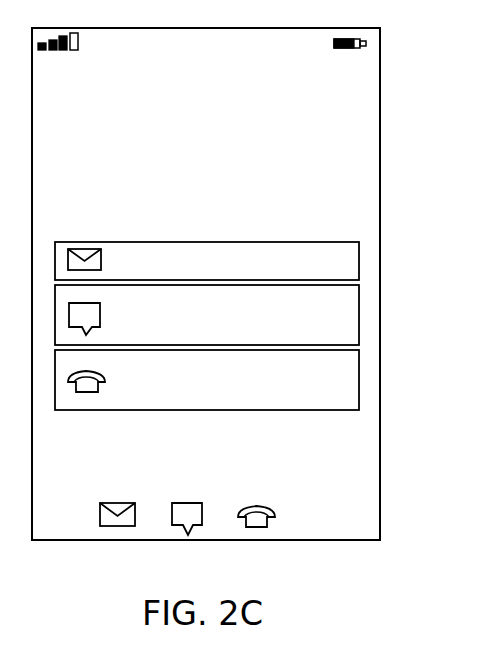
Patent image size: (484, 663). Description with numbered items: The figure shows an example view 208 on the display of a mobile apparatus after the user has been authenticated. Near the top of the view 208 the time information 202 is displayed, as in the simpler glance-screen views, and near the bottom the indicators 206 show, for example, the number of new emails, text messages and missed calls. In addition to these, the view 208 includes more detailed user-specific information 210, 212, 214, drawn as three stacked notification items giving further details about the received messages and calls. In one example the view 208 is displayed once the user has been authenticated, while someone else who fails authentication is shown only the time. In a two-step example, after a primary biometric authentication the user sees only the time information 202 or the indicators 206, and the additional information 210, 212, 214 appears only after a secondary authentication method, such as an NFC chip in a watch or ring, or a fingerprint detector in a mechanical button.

The view 208 is at (380, 62).
The time information 202 is at (222, 122).
The user-specific information 210 is at (359, 262).
The user-specific information 212 is at (359, 313).
The user-specific information 214 is at (359, 377).
The indicators 206 is at (233, 485).